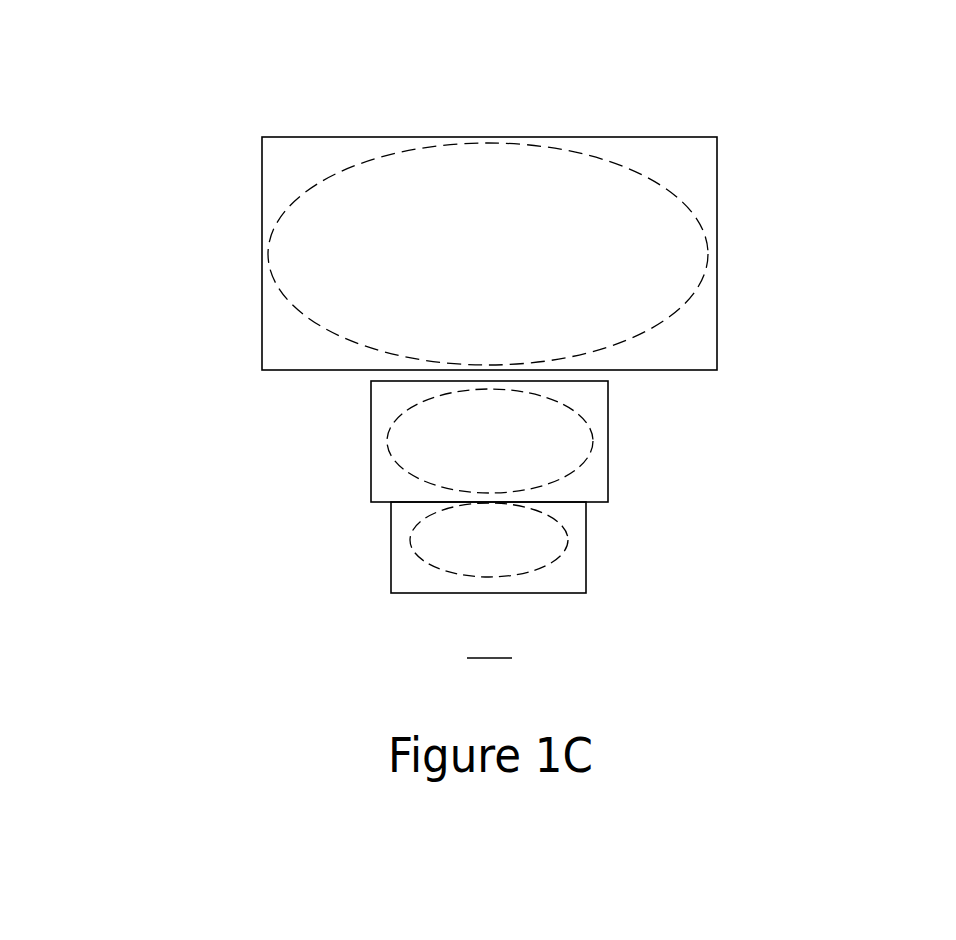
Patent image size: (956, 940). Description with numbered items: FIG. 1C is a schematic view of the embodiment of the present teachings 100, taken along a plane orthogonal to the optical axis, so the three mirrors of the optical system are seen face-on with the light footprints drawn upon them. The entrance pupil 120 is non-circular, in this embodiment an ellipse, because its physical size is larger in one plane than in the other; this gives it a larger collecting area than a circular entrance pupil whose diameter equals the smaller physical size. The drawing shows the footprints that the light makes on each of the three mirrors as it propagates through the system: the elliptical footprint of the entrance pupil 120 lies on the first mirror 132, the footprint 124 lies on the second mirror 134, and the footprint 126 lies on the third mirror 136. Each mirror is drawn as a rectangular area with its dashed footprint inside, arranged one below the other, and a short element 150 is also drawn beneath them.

The embodiment of the present teachings 100 is at (158, 95).
The entrance pupil 120 is at (685, 302).
The footprint 124 is at (375, 413).
The footprint 126 is at (413, 526).
The mirror 132 is at (717, 182).
The mirror 134 is at (608, 418).
The mirror 136 is at (586, 553).
The image sensor 150 is at (475, 657).